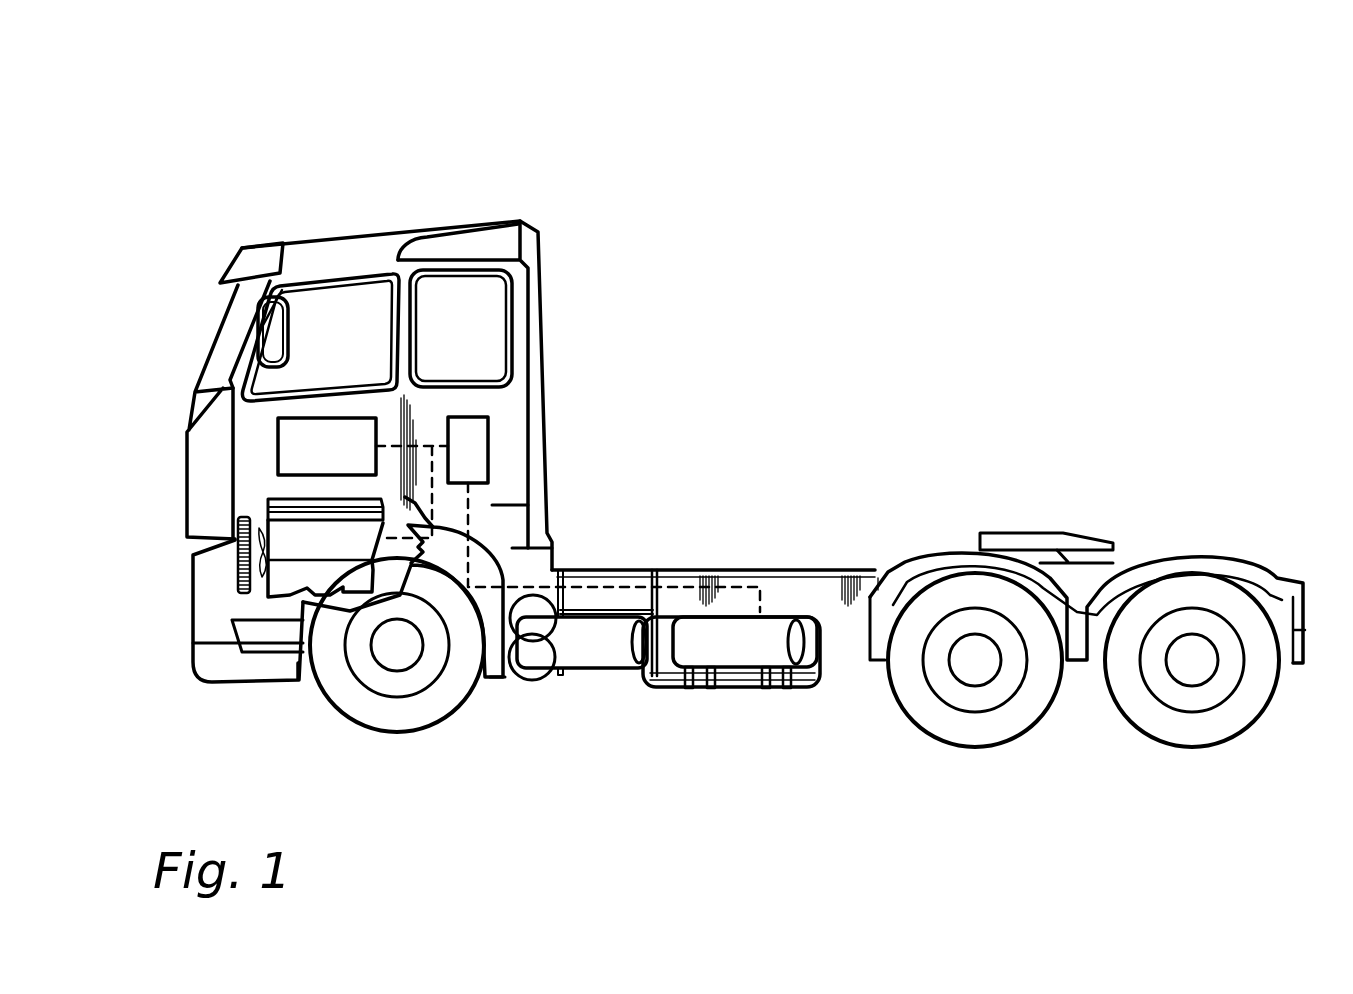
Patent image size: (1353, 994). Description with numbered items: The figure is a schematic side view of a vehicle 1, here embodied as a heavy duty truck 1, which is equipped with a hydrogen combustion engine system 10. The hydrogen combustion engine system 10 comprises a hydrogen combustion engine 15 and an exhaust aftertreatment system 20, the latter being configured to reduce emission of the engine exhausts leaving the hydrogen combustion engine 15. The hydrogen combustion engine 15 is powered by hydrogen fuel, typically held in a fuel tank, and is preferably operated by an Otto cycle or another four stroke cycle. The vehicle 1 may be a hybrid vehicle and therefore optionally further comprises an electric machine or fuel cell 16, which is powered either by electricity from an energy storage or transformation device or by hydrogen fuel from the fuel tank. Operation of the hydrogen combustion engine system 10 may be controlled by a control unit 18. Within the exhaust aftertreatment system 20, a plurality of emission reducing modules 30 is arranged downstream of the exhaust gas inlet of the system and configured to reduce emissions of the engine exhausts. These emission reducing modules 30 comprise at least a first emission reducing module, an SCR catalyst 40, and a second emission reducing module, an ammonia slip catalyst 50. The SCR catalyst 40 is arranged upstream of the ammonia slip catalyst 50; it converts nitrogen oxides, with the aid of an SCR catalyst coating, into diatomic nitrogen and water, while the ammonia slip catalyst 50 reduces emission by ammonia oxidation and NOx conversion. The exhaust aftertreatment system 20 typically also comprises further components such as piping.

The vehicle 1 is at (697, 463).
The hydrogen combustion engine system 10 is at (425, 496).
The hydrogen combustion engine 15 is at (280, 585).
The electric machine or fuel cell 16 is at (323, 447).
The control unit 18 is at (488, 447).
The exhaust aftertreatment system 20 is at (592, 716).
The emission reducing modules 30 is at (818, 753).
The SCR catalyst 40 is at (578, 668).
The ammonia slip catalyst 50 is at (735, 668).